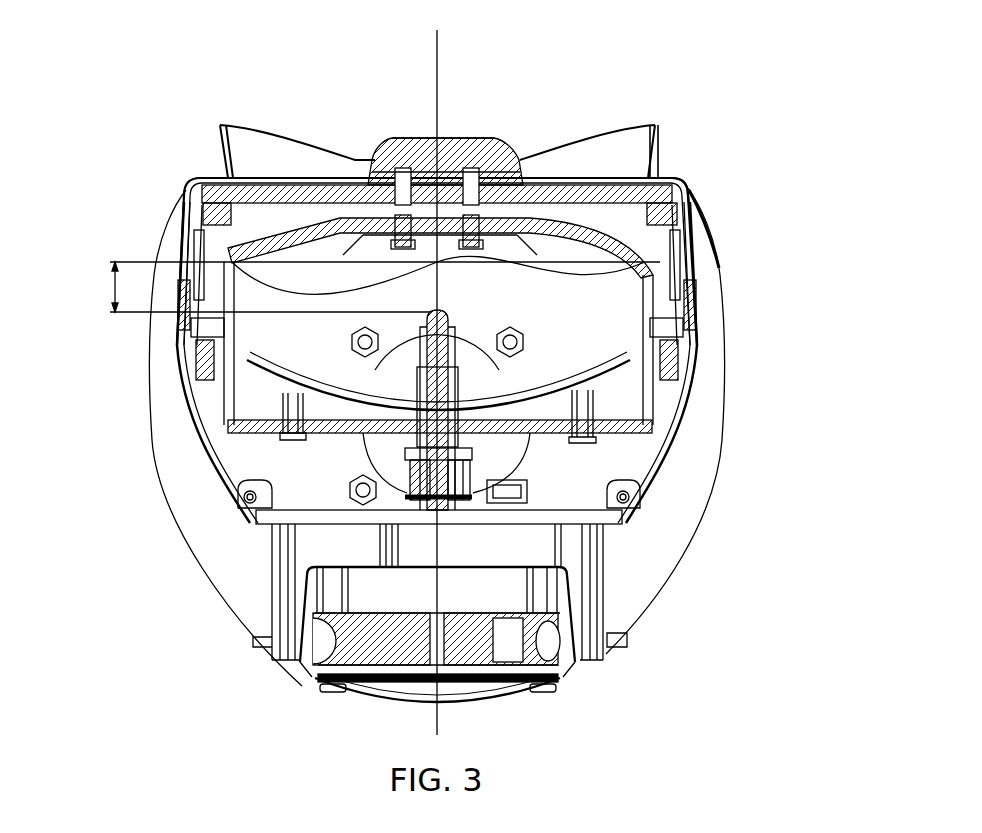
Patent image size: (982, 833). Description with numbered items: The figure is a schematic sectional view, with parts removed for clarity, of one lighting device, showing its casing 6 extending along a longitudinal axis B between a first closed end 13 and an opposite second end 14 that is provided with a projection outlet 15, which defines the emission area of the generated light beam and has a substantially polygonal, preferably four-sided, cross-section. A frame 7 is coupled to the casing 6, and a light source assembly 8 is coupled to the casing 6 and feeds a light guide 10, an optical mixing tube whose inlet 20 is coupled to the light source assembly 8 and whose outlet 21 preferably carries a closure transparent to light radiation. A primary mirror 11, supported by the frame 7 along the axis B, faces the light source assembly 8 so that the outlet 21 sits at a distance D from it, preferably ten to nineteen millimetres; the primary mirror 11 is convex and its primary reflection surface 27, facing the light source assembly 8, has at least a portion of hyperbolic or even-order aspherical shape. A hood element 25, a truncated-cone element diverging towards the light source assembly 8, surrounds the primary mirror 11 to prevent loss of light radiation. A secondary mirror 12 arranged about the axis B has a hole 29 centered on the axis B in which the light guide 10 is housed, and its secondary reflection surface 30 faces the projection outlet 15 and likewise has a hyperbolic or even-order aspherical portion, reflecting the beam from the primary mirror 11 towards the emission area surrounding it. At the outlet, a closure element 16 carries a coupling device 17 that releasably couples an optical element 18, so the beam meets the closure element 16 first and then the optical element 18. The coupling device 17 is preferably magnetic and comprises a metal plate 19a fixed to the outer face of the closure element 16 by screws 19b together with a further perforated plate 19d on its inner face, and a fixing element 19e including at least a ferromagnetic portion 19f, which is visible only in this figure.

The longitudinal axis B is at (440, 50).
The distance D is at (112, 288).
The casing 6 is at (165, 380).
The frame 7 is at (712, 260).
The light source assembly 8 is at (400, 517).
The light guide 10 is at (448, 340).
The primary mirror 11 is at (693, 190).
The secondary mirror 12 is at (707, 332).
The first closed end 13 is at (652, 654).
The second end 14 is at (178, 170).
The projection outlet 15 is at (245, 110).
The closure element 16 is at (600, 115).
The coupling device 17 is at (510, 120).
The optical element 18 is at (660, 155).
The metal plate 19a is at (519, 160).
The screws 19b is at (373, 143).
The perforated plate 19d is at (520, 207).
The fixing element 19e is at (413, 137).
The ferromagnetic portion 19f is at (480, 152).
The inlet 20 is at (487, 513).
The outlet 21 is at (460, 298).
The hood element 25 is at (335, 235).
The primary reflection surface 27 is at (295, 345).
The hole 29 is at (476, 398).
The secondary reflection surface 30 is at (290, 350).